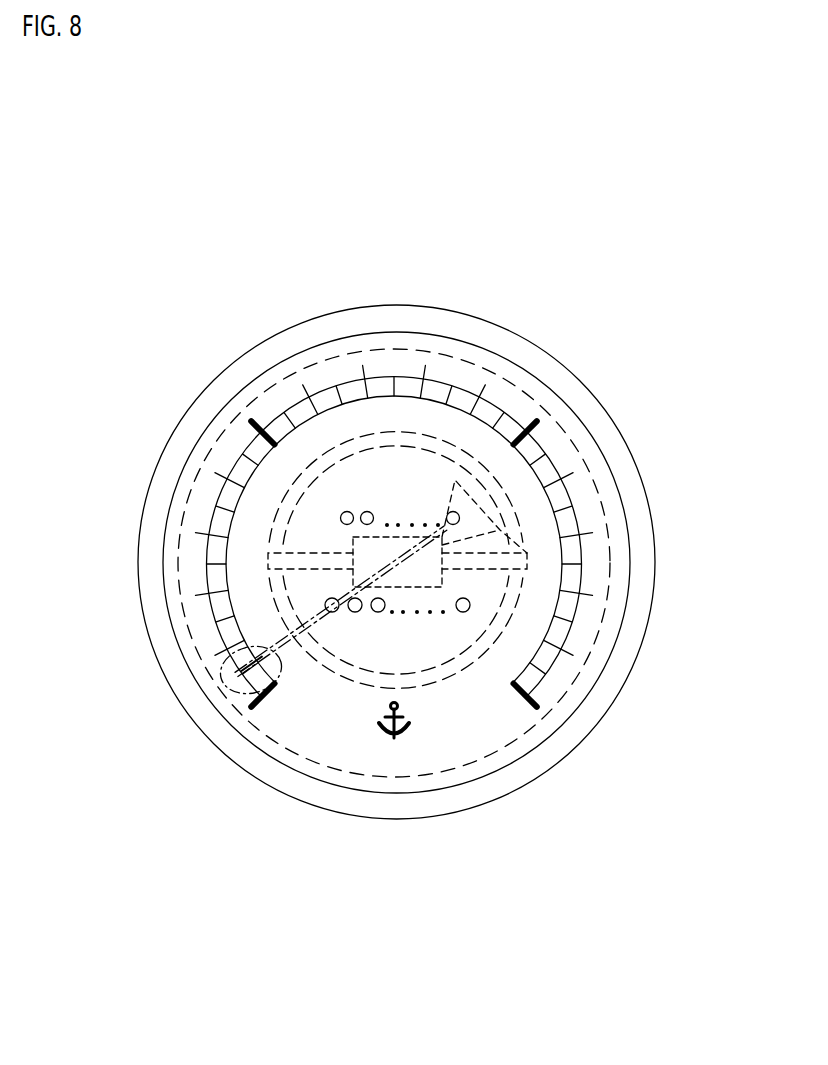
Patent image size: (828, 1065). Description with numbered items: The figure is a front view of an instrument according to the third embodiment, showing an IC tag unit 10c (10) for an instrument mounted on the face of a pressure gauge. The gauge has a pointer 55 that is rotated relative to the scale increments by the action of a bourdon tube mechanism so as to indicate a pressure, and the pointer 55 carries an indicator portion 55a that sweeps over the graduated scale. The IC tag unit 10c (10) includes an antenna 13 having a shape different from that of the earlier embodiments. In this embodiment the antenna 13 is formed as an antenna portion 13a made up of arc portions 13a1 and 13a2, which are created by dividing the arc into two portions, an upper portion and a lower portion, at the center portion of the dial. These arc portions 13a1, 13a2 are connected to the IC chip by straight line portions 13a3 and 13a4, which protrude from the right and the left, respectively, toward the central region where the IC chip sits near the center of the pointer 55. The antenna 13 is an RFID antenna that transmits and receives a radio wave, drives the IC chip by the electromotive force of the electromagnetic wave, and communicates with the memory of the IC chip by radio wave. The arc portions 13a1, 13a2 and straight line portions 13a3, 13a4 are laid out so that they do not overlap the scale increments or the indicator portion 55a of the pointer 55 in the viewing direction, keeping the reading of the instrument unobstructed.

The IC tag unit 10 is at (352, 562).
The IC tag unit for an instrument 10c is at (212, 428).
The antenna 13 is at (387, 574).
The antenna portion 13a is at (427, 432).
The arc portion 13a1 is at (480, 462).
The arc portion 13a2 is at (365, 690).
The straight line portion 13a3 is at (482, 555).
The straight line portion 13a4 is at (320, 571).
The pointer 55 is at (276, 695).
The indicator portion 55a is at (220, 680).